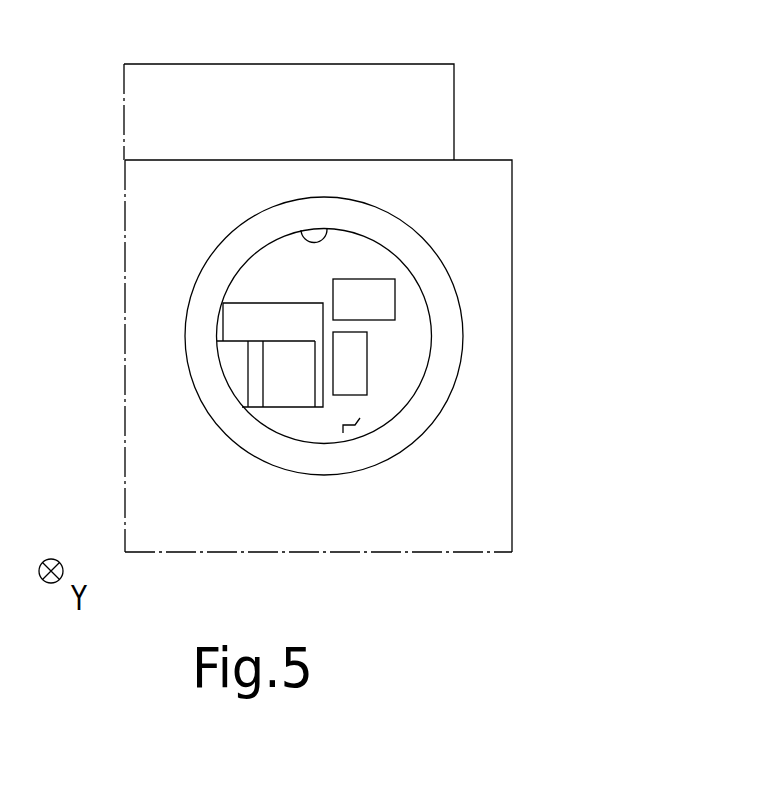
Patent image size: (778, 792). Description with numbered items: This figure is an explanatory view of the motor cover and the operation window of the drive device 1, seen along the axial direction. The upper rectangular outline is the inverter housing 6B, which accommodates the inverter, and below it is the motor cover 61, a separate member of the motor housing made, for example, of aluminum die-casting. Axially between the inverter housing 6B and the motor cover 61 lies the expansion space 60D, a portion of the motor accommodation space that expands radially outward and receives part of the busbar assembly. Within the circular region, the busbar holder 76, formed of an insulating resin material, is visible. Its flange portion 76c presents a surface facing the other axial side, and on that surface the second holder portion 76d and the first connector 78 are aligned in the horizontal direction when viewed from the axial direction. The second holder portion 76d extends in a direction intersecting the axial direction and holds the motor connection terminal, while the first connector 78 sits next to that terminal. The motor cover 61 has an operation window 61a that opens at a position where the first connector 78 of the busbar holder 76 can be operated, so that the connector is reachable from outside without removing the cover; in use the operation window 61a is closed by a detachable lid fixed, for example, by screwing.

The drive device 1 is at (556, 100).
The inverter housing 6B is at (143, 118).
The motor cover 61 is at (497, 522).
The operation window 61a is at (327, 229).
The busbar holder 76 is at (258, 264).
The flange portion 76c is at (390, 262).
The second holder portion 76d is at (230, 320).
The first connector 78 is at (357, 357).
The expansion space 60D is at (355, 426).